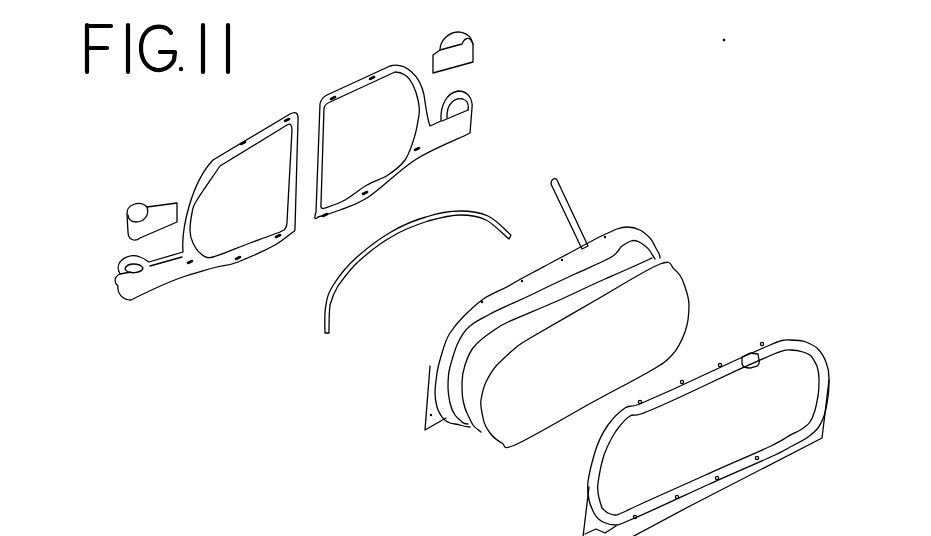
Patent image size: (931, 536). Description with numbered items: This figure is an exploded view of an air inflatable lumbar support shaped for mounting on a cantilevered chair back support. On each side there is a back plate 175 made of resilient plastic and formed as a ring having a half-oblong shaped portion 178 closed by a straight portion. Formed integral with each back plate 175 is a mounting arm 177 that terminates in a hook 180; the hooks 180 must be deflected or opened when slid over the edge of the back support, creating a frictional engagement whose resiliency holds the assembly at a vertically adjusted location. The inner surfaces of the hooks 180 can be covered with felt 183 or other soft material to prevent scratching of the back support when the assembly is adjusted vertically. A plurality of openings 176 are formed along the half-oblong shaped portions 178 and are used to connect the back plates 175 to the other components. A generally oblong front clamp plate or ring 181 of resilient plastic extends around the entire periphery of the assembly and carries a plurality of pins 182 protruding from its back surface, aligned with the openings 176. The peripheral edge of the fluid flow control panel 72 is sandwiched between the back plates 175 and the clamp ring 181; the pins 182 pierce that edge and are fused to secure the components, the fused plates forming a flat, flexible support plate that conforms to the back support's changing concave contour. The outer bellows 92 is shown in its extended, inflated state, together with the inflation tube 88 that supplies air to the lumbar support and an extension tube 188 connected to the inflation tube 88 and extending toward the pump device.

The fluid flow control panel 72 is at (641, 228).
The inflation tube 88 is at (568, 197).
The outer bellows 92 is at (513, 301).
The back plate 175 is at (262, 117).
The openings 176 is at (238, 264).
The mounting arm 177 is at (167, 279).
The half-oblong shaped portion 178 is at (209, 167).
The hook 180 is at (126, 298).
The front clamp plate or ring 181 is at (671, 423).
The pins 182 is at (722, 366).
The felt 183 is at (137, 233).
The extension tube 188 is at (445, 222).